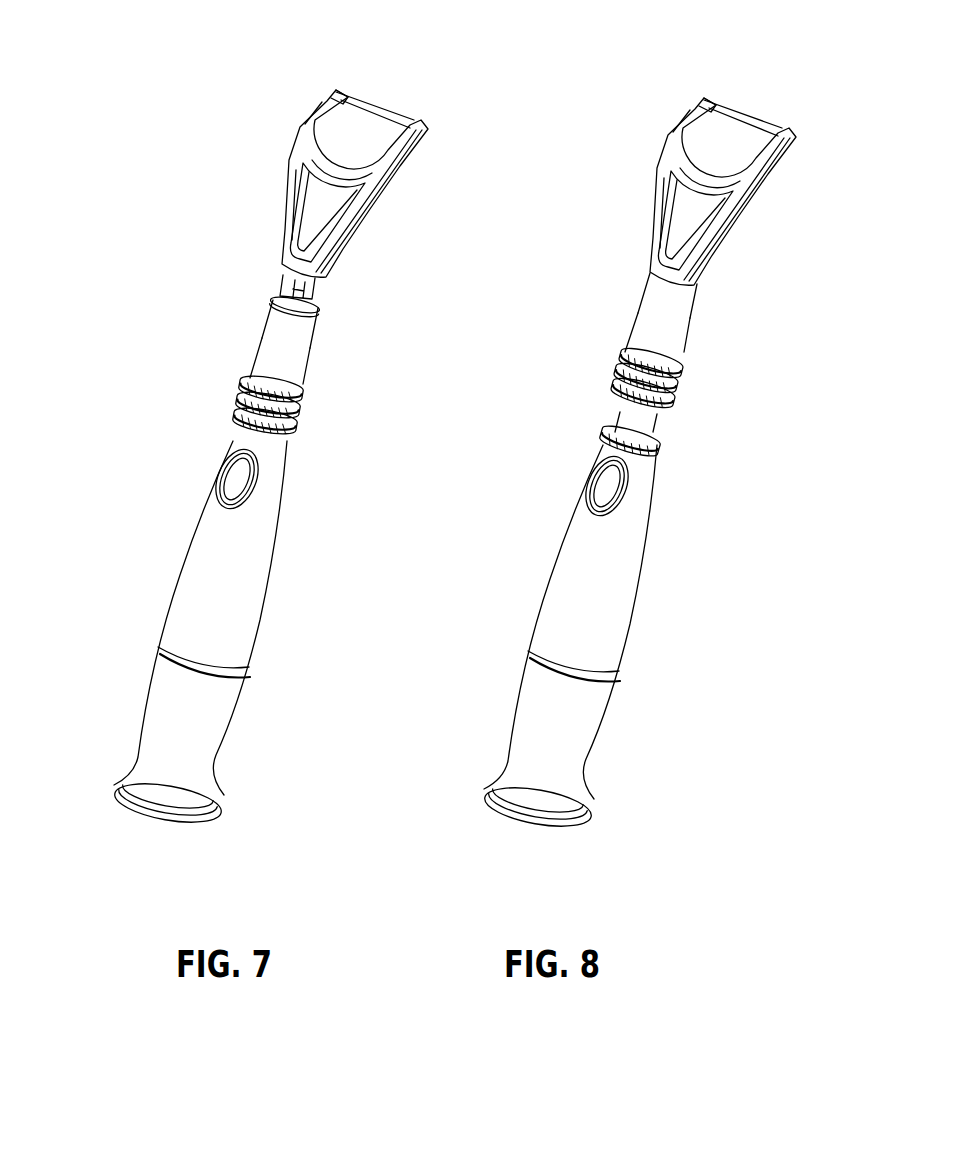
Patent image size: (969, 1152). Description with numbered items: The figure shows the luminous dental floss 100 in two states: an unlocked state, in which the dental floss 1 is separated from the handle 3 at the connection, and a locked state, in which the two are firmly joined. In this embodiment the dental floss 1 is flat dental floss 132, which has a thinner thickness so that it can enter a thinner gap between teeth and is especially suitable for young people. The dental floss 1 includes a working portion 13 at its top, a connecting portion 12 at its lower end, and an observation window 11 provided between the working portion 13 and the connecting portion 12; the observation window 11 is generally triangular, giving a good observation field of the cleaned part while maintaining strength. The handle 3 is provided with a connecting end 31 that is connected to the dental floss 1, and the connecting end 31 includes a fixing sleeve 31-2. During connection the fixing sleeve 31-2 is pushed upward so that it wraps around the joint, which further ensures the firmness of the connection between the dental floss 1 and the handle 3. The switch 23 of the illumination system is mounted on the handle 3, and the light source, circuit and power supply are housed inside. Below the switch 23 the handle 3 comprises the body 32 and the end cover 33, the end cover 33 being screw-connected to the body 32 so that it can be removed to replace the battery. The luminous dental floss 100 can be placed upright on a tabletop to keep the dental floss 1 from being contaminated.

In FIG. 7, the dental floss 1 is at (290, 143).
In FIG. 8, the dental floss 1 is at (684, 181).
In FIG. 7, the observation window 11 is at (315, 207).
In FIG. 8, the observation window 11 is at (645, 220).
In FIG. 7, the connecting portion 12 is at (296, 290).
In FIG. 7, the working portion 13 is at (378, 122).
In FIG. 8, the working portion 13 is at (781, 95).
In FIG. 7, the flat dental floss 132 is at (358, 102).
In FIG. 8, the flat dental floss 132 is at (688, 65).
In FIG. 7, the switch 23 is at (237, 477).
In FIG. 8, the switch 23 is at (600, 483).
In FIG. 7, the handle 3 is at (208, 627).
In FIG. 8, the handle 3 is at (619, 639).
In FIG. 7, the connecting end 31 is at (260, 362).
In FIG. 8, the connecting end 31 is at (675, 345).
In FIG. 7, the fixing sleeve 31-2 is at (273, 327).
In FIG. 8, the fixing sleeve 31-2 is at (676, 305).
In FIG. 7, the body 32 is at (250, 560).
In FIG. 7, the end cover 33 is at (155, 685).
In FIG. 8, the end cover 33 is at (587, 723).
In FIG. 8, the luminous dental floss 100 is at (598, 639).